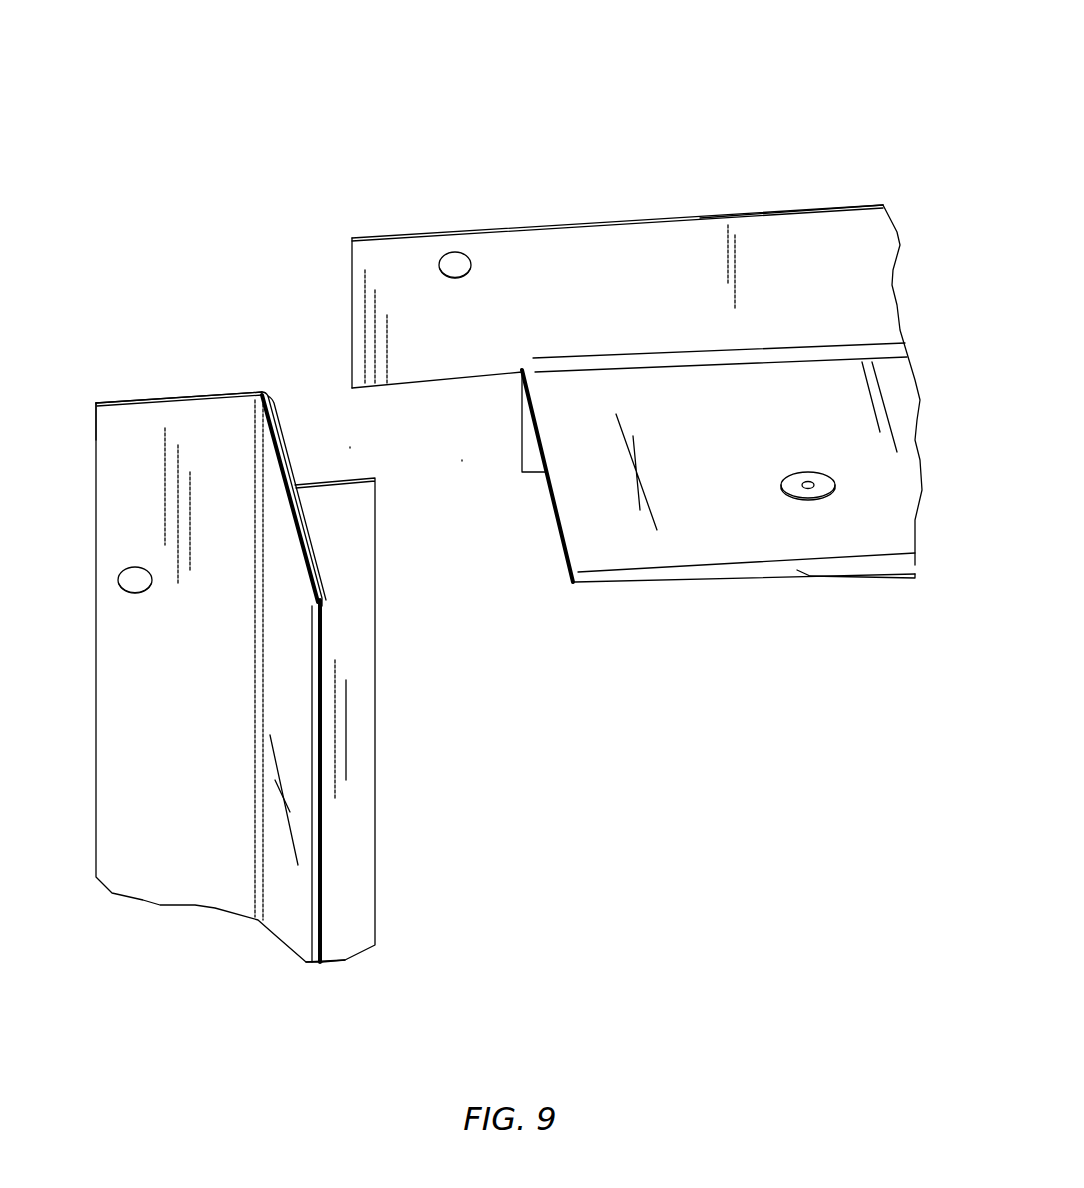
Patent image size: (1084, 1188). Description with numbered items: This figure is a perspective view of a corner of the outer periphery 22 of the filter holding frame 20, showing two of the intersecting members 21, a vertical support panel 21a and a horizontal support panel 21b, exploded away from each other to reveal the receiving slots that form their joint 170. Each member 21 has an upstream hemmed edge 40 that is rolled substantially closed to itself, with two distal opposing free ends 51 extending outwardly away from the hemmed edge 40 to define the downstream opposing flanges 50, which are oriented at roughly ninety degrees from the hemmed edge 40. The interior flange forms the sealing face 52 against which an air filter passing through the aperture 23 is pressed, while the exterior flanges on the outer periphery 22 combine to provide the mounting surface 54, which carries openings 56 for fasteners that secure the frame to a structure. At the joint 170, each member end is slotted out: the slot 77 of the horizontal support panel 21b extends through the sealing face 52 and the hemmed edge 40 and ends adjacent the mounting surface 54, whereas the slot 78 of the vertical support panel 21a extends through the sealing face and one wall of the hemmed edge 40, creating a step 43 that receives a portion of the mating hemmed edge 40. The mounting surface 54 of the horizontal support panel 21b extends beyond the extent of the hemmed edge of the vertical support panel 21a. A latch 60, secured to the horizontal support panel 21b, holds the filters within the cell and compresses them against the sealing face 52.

The filter holding frame 20 is at (312, 90).
The intersecting members 21 is at (540, 160).
The vertical support panel 21a is at (168, 895).
The horizontal support panel 21b is at (697, 555).
The outer periphery 22 is at (402, 215).
The aperture 23 is at (375, 880).
The upstream hemmed edge 40 is at (293, 925).
The step 43 is at (326, 553).
The downstream opposing flanges 50 is at (122, 560).
The distal opposing free ends 51 is at (96, 530).
The sealing face 52 is at (362, 650).
The mounting surface 54 is at (198, 427).
The openings 56 is at (137, 595).
The latches 60 is at (868, 592).
The slot 77 is at (462, 460).
The slot 78 is at (350, 447).
The joint 170 is at (275, 248).